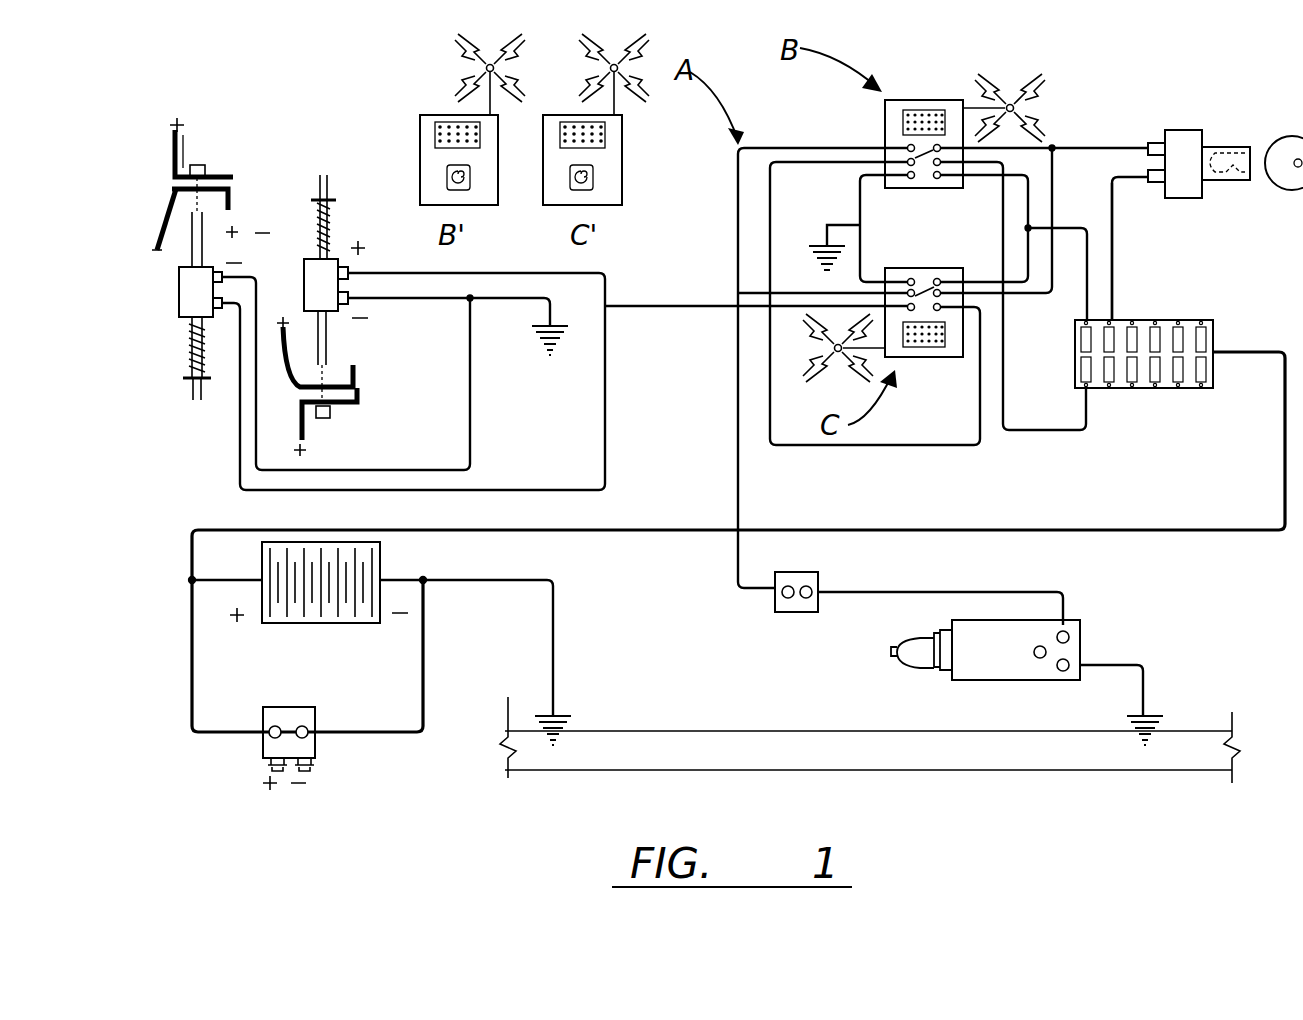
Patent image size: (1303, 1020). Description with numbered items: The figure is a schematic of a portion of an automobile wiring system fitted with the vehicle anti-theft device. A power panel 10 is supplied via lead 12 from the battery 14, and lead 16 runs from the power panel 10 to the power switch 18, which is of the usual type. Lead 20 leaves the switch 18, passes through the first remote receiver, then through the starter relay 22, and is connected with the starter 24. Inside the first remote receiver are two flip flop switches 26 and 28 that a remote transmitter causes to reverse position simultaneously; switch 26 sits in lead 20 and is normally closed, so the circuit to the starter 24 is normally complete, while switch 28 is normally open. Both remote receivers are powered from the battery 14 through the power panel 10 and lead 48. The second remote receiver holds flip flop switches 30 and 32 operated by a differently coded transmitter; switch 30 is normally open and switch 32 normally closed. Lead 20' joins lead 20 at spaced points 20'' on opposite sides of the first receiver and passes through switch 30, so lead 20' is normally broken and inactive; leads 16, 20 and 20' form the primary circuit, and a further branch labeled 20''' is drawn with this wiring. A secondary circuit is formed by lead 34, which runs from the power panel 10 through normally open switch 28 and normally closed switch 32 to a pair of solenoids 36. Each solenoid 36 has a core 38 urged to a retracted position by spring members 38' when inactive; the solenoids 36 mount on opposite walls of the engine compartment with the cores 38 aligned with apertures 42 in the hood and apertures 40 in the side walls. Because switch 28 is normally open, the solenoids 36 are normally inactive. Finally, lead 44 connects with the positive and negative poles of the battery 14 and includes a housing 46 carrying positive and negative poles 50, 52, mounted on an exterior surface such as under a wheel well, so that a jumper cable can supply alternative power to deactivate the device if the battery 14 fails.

The power panel 10 is at (1190, 320).
The lead 12 is at (1280, 522).
The battery 14 is at (300, 623).
The lead 16 is at (1112, 280).
The power switch 18 is at (1200, 130).
The lead 20 is at (982, 339).
The lead 20' is at (996, 256).
The spaced points 20'' is at (1100, 201).
The wire 20''' is at (779, 258).
The starter relay 22 is at (797, 612).
The starter 24 is at (1020, 670).
The flip flop switch 26 is at (925, 152).
The flip flop switch 28 is at (922, 165).
The flip flop switch 30 is at (914, 283).
The flip flop switch 32 is at (911, 312).
The lead 34 is at (770, 240).
The solenoid 36 is at (185, 285).
The core 38 is at (259, 283).
The spring member 38' is at (254, 285).
The aperture 40 is at (195, 192).
The aperture 42 is at (200, 165).
The lead 44 is at (192, 668).
The housing 46 is at (298, 707).
The lead 48 is at (1080, 225).
The positive pole 50 is at (268, 768).
The negative pole 52 is at (318, 770).